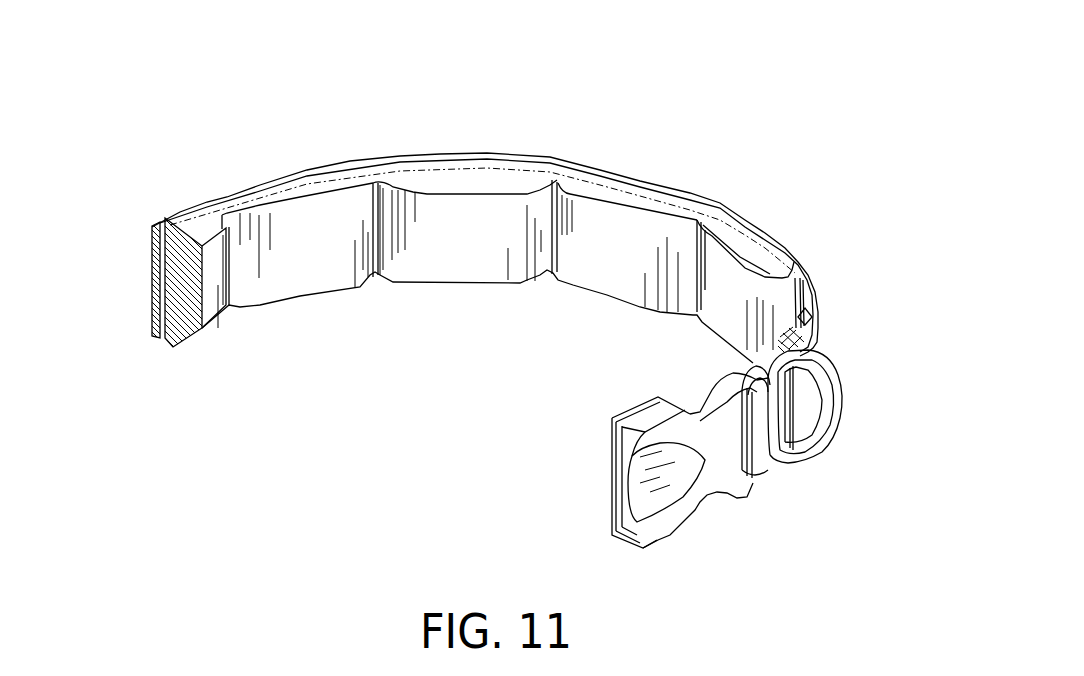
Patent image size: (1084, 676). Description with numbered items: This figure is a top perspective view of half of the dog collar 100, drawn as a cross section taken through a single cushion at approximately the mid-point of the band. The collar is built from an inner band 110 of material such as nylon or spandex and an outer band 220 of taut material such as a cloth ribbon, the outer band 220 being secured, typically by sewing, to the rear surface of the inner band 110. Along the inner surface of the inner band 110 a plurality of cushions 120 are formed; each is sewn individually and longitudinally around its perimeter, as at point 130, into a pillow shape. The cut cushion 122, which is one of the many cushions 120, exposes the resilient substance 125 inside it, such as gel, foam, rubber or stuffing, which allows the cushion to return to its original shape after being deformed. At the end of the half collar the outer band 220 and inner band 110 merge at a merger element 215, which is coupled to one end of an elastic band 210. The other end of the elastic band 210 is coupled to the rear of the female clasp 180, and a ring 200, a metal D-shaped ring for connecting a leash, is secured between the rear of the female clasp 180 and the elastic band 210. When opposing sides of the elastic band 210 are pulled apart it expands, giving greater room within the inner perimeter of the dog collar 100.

The dog collar 100 is at (738, 93).
The inner band 110 is at (487, 153).
The cushions 120 is at (328, 217).
The cushion 122 is at (216, 328).
The resilient substance 125 is at (178, 257).
The sewing point 130 is at (555, 183).
The female clasp 180 is at (699, 503).
The ring 200 is at (840, 386).
The elastic band 210 is at (780, 442).
The merger element 215 is at (822, 302).
The outer band 220 is at (153, 305).